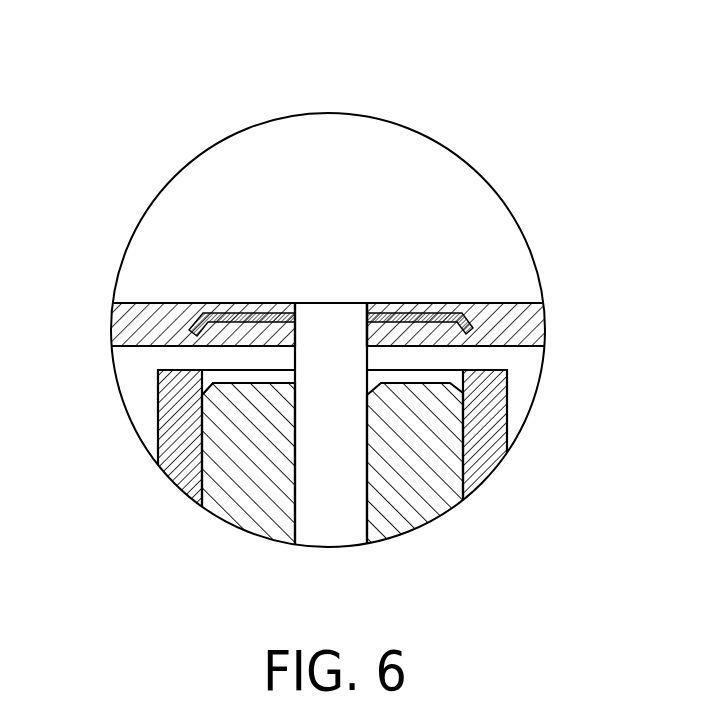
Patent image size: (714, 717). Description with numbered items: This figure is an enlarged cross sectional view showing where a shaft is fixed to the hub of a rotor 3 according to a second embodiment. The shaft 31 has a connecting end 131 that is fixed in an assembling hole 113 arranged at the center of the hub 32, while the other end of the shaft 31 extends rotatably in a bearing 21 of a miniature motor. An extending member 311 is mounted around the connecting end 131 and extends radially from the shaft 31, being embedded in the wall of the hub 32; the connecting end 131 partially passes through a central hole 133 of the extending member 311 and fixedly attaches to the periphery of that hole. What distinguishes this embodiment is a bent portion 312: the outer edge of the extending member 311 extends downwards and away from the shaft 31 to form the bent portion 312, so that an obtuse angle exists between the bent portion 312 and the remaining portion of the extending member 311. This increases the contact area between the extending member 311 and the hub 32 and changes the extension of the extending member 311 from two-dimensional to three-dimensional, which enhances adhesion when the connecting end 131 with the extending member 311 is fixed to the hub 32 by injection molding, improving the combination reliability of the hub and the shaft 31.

The rotor 3 is at (331, 194).
The shaft 31 is at (406, 313).
The hub 32 is at (148, 318).
The extending member 311 is at (430, 300).
The bent portion 312 is at (482, 300).
The assembling hole 113 is at (305, 303).
The connecting end 131 is at (330, 303).
The central hole 133 is at (357, 303).
The bearing 21 is at (252, 485).